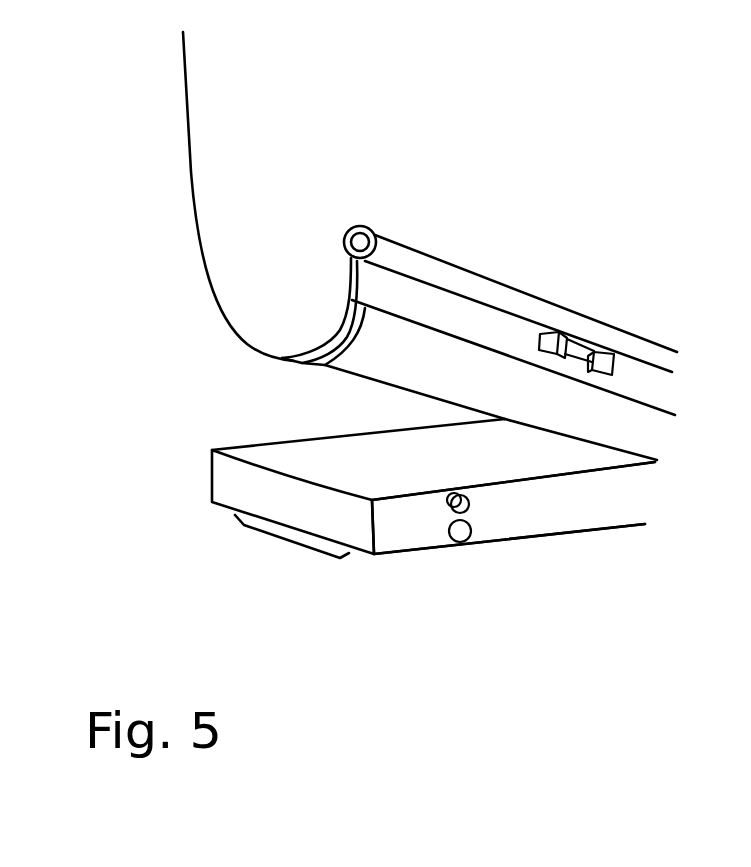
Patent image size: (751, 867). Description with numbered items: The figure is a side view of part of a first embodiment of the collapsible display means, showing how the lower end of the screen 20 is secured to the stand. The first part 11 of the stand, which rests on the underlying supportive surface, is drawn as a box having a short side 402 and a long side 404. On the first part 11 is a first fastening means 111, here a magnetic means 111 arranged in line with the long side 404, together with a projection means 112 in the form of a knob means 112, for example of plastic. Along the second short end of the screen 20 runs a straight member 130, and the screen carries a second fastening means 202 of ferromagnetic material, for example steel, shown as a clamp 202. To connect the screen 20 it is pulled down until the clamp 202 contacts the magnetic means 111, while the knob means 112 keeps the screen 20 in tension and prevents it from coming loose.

The screen 20 is at (190, 173).
The straight member 130 is at (410, 243).
The second fastening means 202 is at (577, 344).
The first part 11 is at (207, 469).
The short side 402 is at (272, 501).
The long side 404 is at (403, 530).
The projection means 112 is at (470, 500).
The first fastening means 111 is at (463, 531).